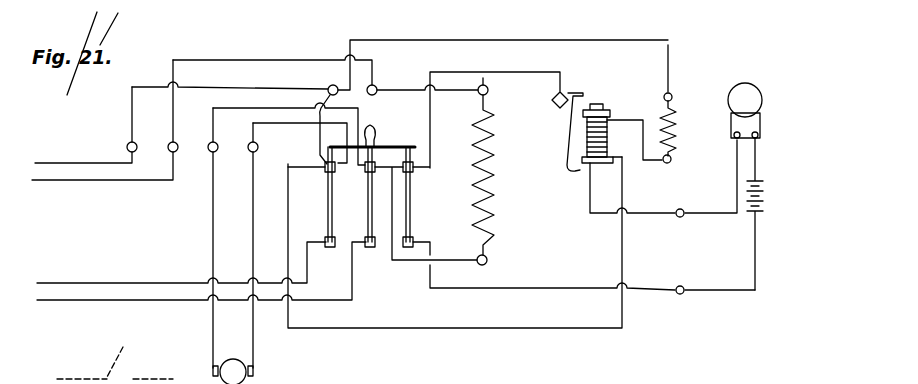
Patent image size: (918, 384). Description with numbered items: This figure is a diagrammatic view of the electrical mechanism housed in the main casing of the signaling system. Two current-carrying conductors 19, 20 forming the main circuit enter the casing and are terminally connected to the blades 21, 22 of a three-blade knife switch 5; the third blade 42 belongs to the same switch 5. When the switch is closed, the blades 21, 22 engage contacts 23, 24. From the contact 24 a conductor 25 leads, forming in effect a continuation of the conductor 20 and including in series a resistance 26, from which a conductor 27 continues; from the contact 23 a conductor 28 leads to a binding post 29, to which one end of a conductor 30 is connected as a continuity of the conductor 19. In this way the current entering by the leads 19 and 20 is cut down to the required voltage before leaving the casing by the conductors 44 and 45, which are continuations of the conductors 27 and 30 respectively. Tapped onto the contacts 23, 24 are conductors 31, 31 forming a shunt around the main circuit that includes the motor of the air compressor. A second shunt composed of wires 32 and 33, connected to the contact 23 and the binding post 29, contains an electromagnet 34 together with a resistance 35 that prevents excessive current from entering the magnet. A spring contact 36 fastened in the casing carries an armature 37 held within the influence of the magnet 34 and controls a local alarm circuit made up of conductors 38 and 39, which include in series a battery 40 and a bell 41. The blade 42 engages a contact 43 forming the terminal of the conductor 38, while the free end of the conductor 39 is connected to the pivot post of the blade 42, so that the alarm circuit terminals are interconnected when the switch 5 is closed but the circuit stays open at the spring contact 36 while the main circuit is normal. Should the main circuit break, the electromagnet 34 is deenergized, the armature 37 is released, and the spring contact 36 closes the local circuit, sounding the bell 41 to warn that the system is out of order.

The switch 5 is at (432, 150).
The conductor 19 is at (153, 280).
The conductor 20 is at (127, 304).
The blade 21 is at (326, 195).
The blade 22 is at (366, 212).
The contact 23 is at (325, 165).
The contact 24 is at (378, 163).
The conductor 25 is at (490, 262).
The resistance 26 is at (494, 187).
The conductor 27 is at (213, 57).
The conductor 28 is at (330, 101).
The binding post 29 is at (331, 84).
The conductor 30 is at (270, 88).
The conductors 31 is at (209, 212).
The wire 32 is at (448, 334).
The wire 33 is at (426, 38).
The electromagnet 34 is at (587, 130).
The resistance 35 is at (675, 112).
The spring contact 36 is at (584, 89).
The armature 37 is at (601, 101).
The conductor 38 is at (487, 71).
The conductor 39 is at (660, 296).
The battery 40 is at (767, 200).
The bell 41 is at (762, 123).
The blade 42 is at (417, 217).
The contact 43 is at (416, 172).
The conductor 44 is at (68, 186).
The conductor 45 is at (83, 164).